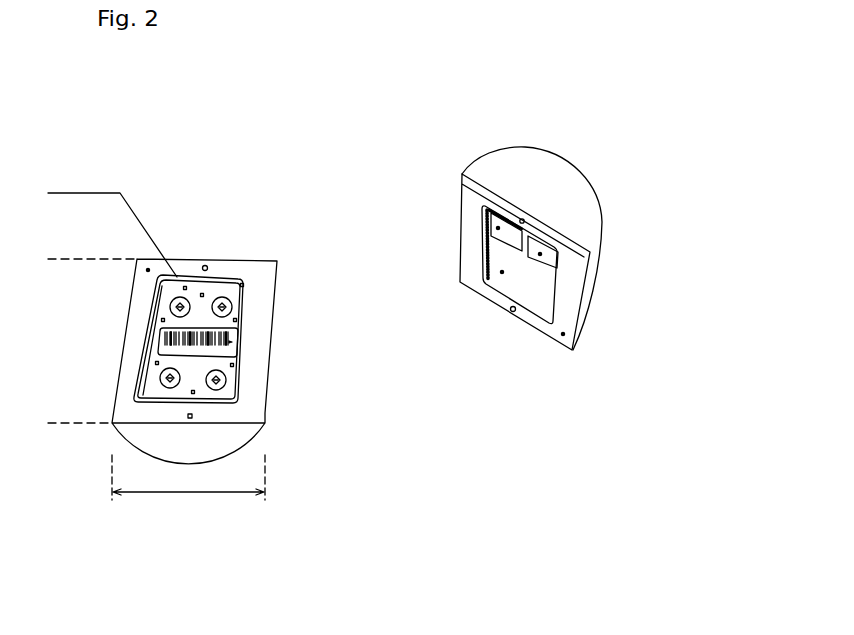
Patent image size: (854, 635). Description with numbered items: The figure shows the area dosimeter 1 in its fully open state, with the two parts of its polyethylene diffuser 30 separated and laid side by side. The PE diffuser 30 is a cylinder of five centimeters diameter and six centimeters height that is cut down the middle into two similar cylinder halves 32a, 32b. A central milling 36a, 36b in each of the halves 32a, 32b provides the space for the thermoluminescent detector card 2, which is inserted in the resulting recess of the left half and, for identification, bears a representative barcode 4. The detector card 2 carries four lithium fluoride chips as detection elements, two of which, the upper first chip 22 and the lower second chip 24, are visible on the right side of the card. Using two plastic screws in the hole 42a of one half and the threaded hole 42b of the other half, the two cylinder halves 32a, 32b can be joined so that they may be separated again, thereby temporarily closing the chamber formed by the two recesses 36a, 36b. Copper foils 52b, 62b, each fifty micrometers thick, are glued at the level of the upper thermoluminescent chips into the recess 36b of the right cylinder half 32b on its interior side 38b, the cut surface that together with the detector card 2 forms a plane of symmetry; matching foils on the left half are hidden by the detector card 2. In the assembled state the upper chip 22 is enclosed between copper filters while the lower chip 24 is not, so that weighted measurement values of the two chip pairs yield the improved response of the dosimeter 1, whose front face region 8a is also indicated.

The area dosimeter 1 is at (609, 470).
The thermoluminescent detector card 2 is at (180, 307).
The barcode 4 is at (243, 341).
The housing front face 8a is at (148, 270).
The lithium-7 fluoride chip 22 is at (222, 307).
The lithium-7 fluoride chip 24 is at (217, 380).
The PE diffuser 30 is at (497, 354).
The cylinder half 32a is at (265, 413).
The cylinder half 32b is at (592, 287).
The central milling 36a is at (251, 278).
The central milling 36b is at (502, 272).
The interior side 38b is at (563, 334).
The hole 42a is at (210, 264).
The threaded hole 42b is at (462, 183).
The copper foil 52b is at (540, 253).
The copper foil 62b is at (498, 228).